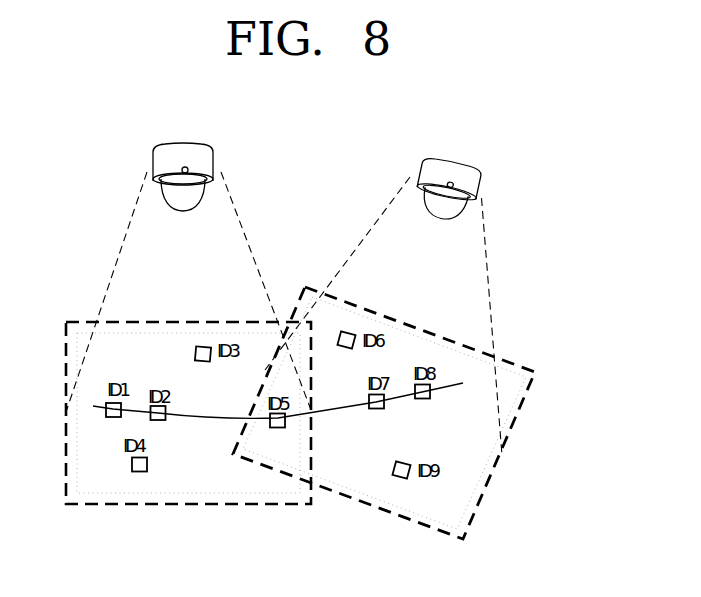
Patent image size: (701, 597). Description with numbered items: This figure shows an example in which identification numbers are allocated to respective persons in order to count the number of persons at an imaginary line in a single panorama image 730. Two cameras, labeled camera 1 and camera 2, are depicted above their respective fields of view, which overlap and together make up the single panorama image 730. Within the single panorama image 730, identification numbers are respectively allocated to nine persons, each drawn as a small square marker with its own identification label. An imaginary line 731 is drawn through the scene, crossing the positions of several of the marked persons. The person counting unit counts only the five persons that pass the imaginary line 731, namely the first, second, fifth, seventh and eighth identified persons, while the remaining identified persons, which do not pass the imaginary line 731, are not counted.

The camera 1 is at (183, 163).
The camera 2 is at (454, 175).
The single panorama image 730 is at (392, 514).
The imaginary line 731 is at (452, 387).